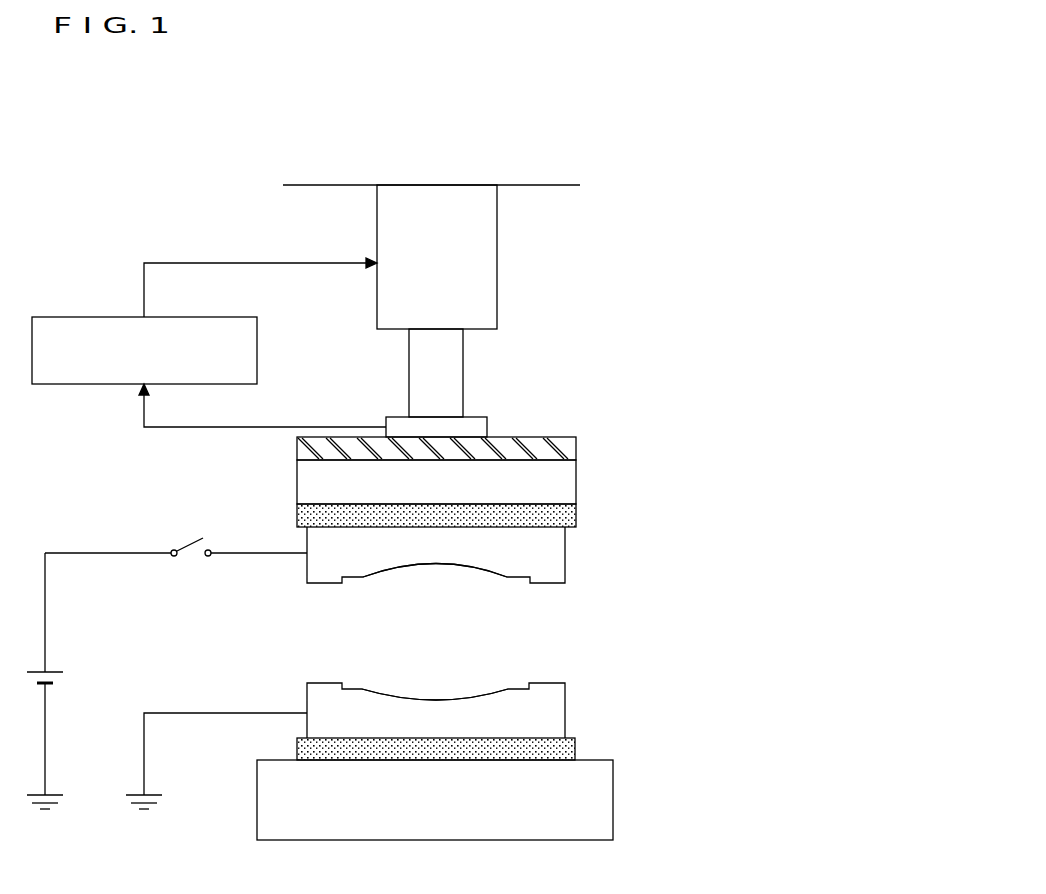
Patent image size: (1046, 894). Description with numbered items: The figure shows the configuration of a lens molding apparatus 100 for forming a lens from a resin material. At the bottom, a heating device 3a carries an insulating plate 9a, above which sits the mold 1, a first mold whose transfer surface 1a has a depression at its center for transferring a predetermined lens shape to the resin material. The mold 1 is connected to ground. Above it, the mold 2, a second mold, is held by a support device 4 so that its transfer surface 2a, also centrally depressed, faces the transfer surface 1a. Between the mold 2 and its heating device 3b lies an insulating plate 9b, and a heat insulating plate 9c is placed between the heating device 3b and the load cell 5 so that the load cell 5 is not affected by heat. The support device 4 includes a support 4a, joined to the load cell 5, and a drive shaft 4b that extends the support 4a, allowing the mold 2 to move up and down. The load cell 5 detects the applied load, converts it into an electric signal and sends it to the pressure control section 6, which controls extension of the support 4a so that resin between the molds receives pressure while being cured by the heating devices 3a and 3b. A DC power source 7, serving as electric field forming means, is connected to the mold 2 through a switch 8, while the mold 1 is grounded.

The lens molding apparatus 100 is at (479, 118).
The support device 4 is at (680, 257).
The drive shaft 4b is at (497, 275).
The support 4a is at (463, 350).
The load cell 5 is at (487, 428).
The pressure control section 6 is at (257, 338).
The heat insulating plate 9c is at (576, 452).
The heating device 3b is at (576, 484).
The insulating plate 9b is at (576, 516).
The mold 2 is at (565, 557).
The transfer surface 2a is at (441, 576).
The switch 8 is at (184, 542).
The DC power source 7 is at (56, 672).
The mold 1 is at (565, 707).
The transfer surface 1a is at (437, 681).
The insulating plate 9a is at (575, 750).
The heating device 3a is at (613, 803).